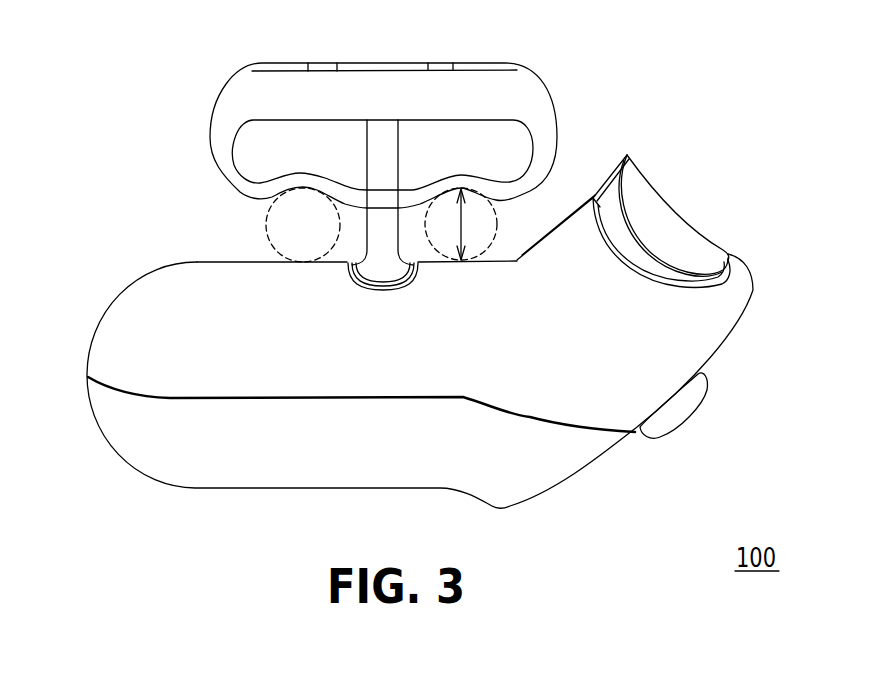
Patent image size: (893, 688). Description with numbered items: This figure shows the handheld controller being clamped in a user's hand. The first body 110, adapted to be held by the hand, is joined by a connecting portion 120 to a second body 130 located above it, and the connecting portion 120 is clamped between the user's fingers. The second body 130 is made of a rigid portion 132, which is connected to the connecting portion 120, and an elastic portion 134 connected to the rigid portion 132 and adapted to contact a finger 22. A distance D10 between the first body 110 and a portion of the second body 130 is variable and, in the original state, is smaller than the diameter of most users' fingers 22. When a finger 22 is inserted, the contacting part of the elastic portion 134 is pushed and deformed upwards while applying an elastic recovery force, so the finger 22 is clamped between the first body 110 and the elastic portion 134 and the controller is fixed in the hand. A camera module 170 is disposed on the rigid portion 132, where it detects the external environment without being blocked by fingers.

The first body 110 is at (140, 292).
The connecting portion 120 is at (383, 138).
The second body 130 is at (434, 125).
The rigid portion 132 is at (490, 65).
The elastic portion 134 is at (531, 90).
The camera module 170 is at (322, 62).
The finger 22 is at (266, 225).
The distance D10 is at (461, 225).